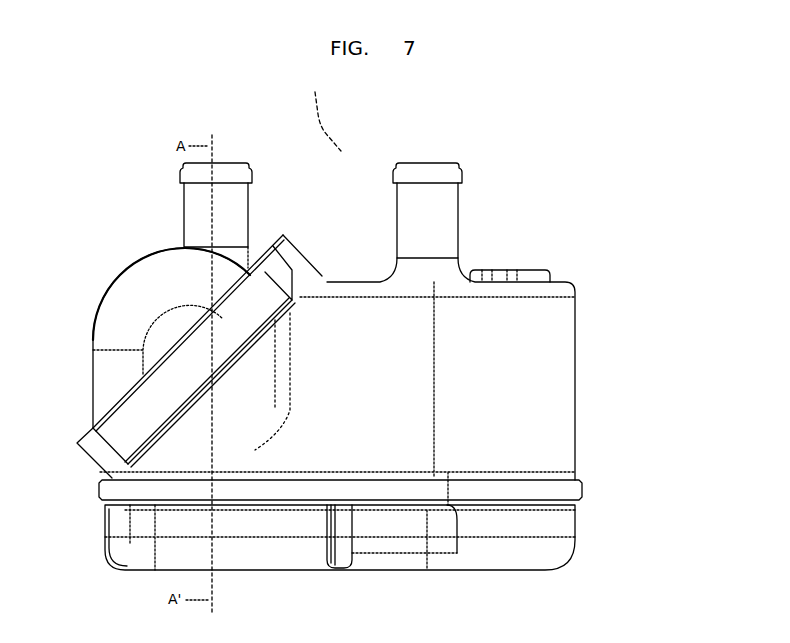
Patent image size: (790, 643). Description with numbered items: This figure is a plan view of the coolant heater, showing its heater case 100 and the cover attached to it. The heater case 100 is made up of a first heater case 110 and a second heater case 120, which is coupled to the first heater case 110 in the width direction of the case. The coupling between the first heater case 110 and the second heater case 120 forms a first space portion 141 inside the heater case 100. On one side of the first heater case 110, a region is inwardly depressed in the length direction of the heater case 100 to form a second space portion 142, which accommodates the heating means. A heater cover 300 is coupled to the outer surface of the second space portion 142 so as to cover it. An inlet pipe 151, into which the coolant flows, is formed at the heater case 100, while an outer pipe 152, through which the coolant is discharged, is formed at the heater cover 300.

The heater case 100 is at (655, 430).
The first heater case 110 is at (583, 433).
The second heater case 120 is at (557, 520).
The first space portion 141 is at (506, 347).
The second space portion 142 is at (232, 398).
The inlet pipe 151 is at (392, 192).
The outer pipe 152 is at (184, 192).
The heater cover 300 is at (150, 258).